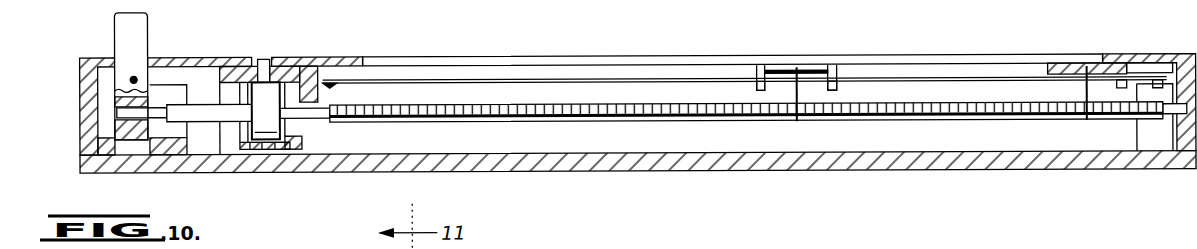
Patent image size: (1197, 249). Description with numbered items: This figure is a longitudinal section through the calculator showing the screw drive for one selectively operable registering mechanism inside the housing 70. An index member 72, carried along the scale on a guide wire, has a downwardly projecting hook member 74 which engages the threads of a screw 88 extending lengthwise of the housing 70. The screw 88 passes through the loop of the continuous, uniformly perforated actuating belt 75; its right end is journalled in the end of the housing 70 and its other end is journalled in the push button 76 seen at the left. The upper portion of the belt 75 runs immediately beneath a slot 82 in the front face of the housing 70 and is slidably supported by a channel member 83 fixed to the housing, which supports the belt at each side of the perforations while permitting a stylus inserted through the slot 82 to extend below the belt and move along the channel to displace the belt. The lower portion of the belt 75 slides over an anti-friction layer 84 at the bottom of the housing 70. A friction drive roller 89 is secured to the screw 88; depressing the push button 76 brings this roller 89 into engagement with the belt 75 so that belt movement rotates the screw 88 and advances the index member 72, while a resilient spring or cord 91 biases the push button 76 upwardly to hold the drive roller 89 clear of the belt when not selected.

The housing 70 is at (783, 239).
The index member 72 is at (800, 74).
The hook member 74 is at (797, 124).
The actuating belt 75 is at (263, 61).
The push button 76 is at (132, 47).
The slot 82 is at (276, 62).
The channel member 83 is at (226, 70).
The anti-friction layer 84 is at (251, 155).
The screw 88 is at (927, 124).
The friction drive roller 89 is at (272, 152).
The resilient spring or cord 91 is at (140, 80).